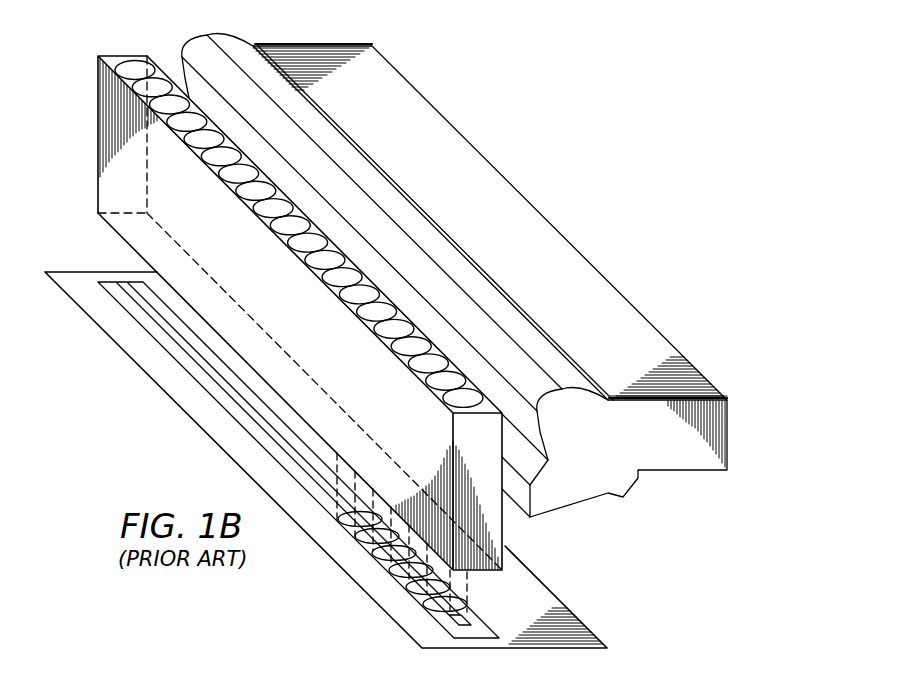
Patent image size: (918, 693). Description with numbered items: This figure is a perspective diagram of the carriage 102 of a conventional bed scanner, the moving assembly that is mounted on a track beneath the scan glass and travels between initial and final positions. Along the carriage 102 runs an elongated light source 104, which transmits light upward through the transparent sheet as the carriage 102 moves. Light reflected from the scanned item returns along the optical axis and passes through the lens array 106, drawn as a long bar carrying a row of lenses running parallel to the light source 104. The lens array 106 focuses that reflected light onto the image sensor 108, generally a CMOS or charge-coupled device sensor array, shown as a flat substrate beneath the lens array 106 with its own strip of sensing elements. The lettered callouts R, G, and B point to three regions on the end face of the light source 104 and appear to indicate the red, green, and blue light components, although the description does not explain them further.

The carriage 102 is at (566, 96).
The light source 104 is at (538, 224).
The lens array 106 is at (128, 226).
The image sensor 108 is at (226, 386).
The red light region R is at (571, 460).
The green light region G is at (623, 453).
The blue light region B is at (676, 448).